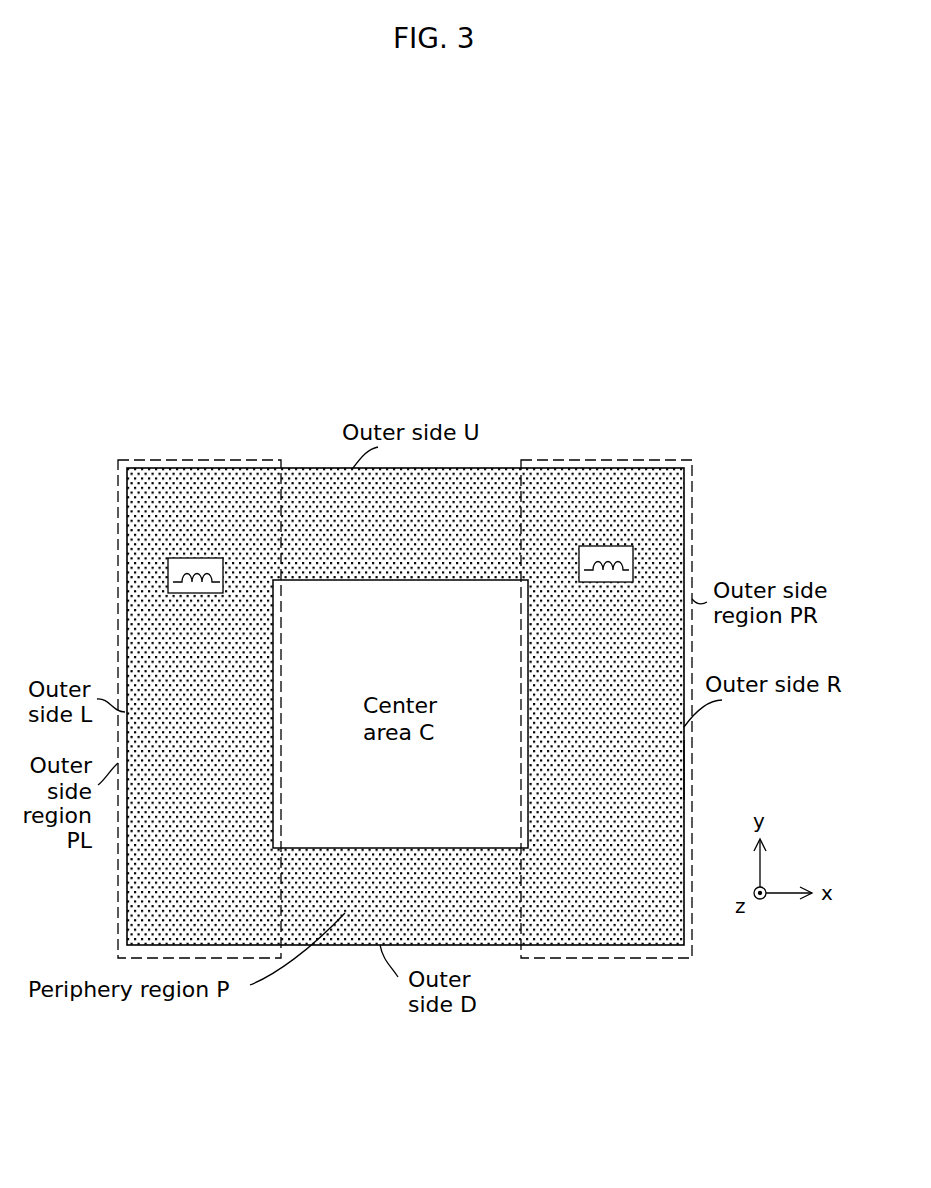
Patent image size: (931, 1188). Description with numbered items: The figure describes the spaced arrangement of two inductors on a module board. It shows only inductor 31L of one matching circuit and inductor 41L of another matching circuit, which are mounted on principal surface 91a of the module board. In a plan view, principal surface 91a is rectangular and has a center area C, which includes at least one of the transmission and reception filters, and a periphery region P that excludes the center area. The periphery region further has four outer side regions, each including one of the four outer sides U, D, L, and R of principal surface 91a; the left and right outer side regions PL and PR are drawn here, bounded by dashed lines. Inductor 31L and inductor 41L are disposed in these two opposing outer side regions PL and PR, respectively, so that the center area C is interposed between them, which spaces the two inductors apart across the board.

The inductor 31L is at (168, 582).
The inductor 41L is at (633, 563).
The principal surface 91a is at (684, 772).